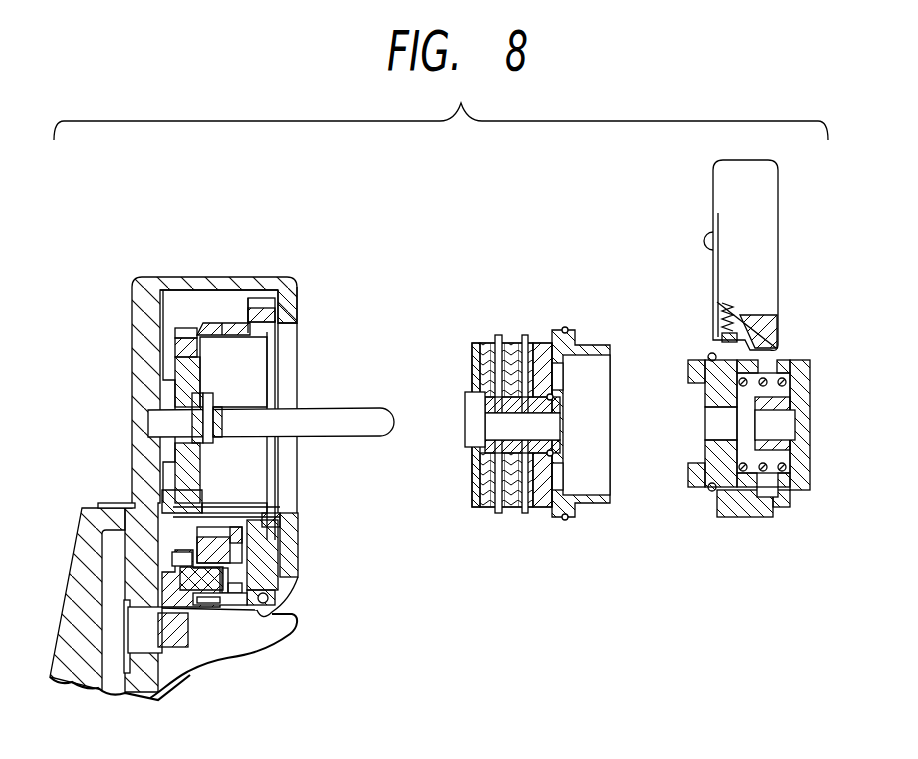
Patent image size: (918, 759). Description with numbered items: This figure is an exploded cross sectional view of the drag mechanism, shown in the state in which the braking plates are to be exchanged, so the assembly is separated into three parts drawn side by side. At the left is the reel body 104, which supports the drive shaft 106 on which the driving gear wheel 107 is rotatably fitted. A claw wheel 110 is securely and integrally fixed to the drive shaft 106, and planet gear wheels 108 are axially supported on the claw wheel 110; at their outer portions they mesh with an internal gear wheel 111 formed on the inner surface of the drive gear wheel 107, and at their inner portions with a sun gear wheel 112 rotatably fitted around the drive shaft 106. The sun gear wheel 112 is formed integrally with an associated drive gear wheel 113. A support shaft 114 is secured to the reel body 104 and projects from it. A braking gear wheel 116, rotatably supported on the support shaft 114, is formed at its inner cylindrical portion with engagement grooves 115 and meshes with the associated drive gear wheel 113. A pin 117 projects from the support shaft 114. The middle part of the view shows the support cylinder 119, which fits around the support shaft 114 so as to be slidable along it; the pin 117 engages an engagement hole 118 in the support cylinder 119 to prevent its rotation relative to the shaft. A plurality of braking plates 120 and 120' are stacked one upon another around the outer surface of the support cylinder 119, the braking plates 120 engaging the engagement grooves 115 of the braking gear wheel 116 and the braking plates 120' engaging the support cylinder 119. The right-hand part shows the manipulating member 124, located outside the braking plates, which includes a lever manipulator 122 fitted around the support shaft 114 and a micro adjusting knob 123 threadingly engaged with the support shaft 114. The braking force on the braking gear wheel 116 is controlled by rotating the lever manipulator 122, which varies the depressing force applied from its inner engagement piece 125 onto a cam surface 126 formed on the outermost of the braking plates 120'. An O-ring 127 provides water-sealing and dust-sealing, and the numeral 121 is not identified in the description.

The reel body 104 is at (153, 287).
The drive shaft 106 is at (255, 622).
The driving gear wheel 107 is at (150, 505).
The planet gear wheels 108 is at (208, 612).
The claw wheel 110 is at (175, 553).
The internal gear wheel 111 is at (250, 542).
The sun gear wheel 112 is at (233, 610).
The associated drive gear wheel 113 is at (225, 548).
The support shaft 114 is at (323, 423).
The engagement grooves 115 is at (248, 335).
The braking gear wheel 116 is at (262, 300).
The pin 117 is at (213, 405).
The engagement hole 118 is at (468, 405).
The support cylinder 119 is at (495, 447).
The braking plates 120 is at (512, 377).
The braking plates 120' is at (533, 390).
The retaining ring 121 is at (552, 455).
The lever manipulator 122 is at (745, 518).
The micro adjusting knob 123 is at (797, 492).
The manipulating member 124 is at (800, 348).
The inner engagement piece 125 is at (693, 490).
The cam surface 126 is at (560, 373).
The O-ring 127 is at (565, 520).